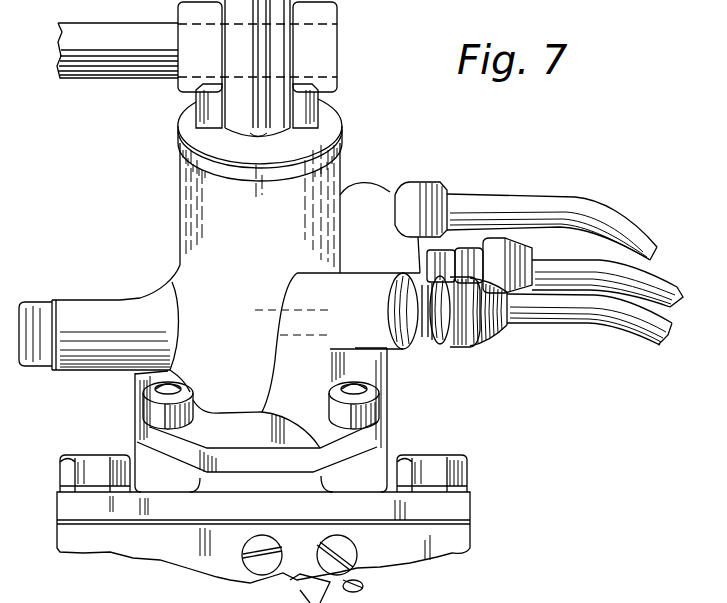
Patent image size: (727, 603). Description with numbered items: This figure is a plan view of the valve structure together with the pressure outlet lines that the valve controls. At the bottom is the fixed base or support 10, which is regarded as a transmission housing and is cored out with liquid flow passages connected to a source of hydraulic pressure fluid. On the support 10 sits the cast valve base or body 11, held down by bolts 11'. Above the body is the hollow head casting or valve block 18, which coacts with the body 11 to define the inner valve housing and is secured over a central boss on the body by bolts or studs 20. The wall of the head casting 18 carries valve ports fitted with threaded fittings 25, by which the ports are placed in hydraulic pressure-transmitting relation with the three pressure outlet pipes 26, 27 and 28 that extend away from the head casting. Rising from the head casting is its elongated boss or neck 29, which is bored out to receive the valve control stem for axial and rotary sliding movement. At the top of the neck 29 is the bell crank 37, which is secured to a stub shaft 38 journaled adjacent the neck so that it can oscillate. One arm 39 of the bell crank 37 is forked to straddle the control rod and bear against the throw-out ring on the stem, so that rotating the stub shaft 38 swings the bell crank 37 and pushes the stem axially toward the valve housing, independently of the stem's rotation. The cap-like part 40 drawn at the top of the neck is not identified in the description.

The base body 10 is at (462, 537).
The mounting flange 11 is at (275, 420).
The flange mounting nut 11' is at (264, 473).
The valve body 18 is at (183, 291).
The nut 20 is at (165, 392).
The tube fitting 25 is at (476, 343).
The tube 26 is at (495, 198).
The tube 27 is at (553, 261).
The tube 28 is at (575, 321).
The cylinder 29 is at (181, 218).
The nut 37 is at (333, 18).
The rack bar 38 is at (107, 72).
The key block 39 is at (313, 112).
The cap 40 is at (327, 127).